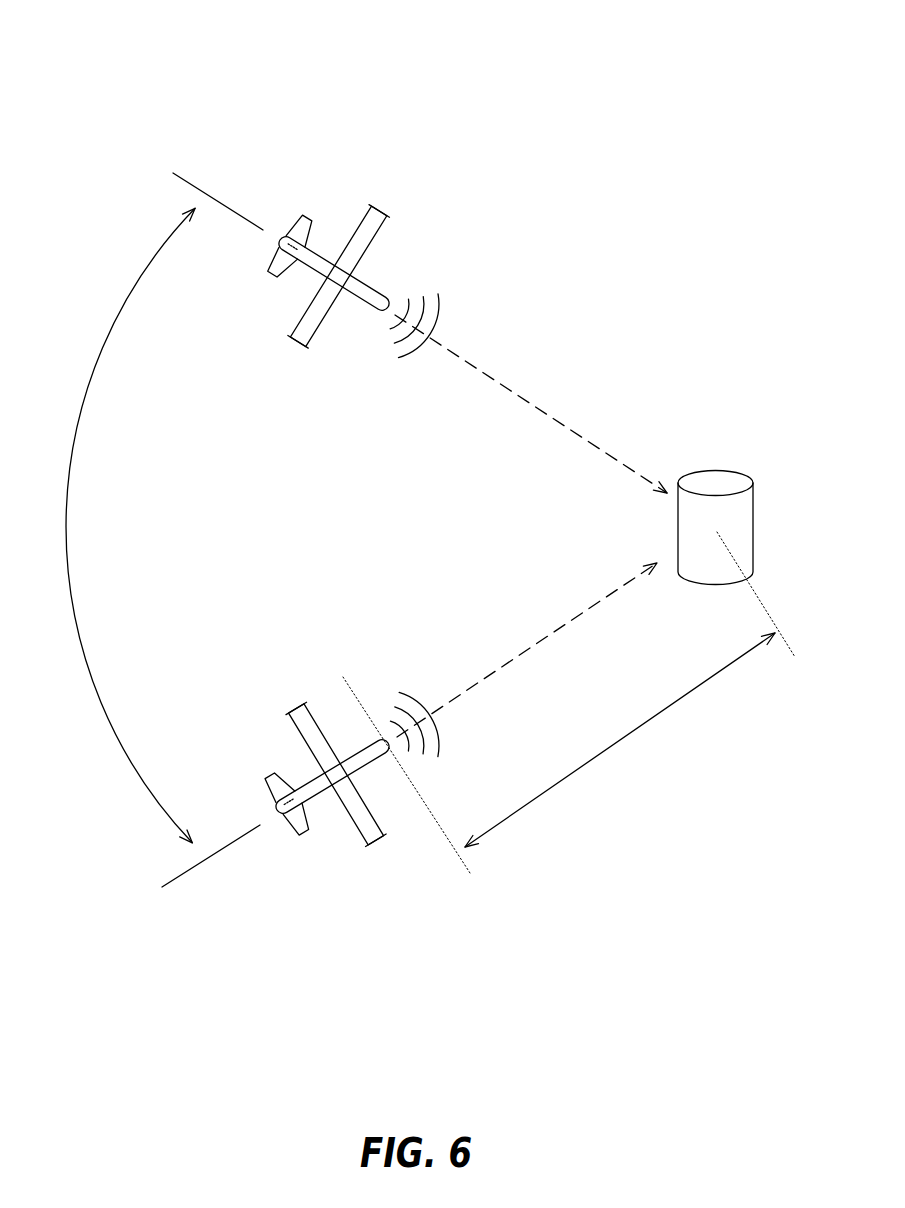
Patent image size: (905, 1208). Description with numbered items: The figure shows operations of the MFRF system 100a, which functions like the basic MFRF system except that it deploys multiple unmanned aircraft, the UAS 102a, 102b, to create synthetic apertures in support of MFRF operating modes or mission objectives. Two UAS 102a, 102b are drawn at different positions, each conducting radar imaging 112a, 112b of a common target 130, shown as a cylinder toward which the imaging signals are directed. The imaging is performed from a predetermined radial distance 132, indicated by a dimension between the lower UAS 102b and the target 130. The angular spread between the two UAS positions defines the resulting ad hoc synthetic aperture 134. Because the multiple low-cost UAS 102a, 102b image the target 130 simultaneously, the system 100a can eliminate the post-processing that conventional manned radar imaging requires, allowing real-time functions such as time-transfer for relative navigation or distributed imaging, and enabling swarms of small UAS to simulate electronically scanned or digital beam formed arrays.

The MFRF system 100a is at (98, 75).
The UAS 102a is at (378, 208).
The UAS 102b is at (348, 820).
The radar imaging 112a is at (477, 363).
The radar imaging 112b is at (540, 642).
The target 130 is at (745, 530).
The radial distance 132 is at (602, 753).
The synthetic aperture 134 is at (70, 485).